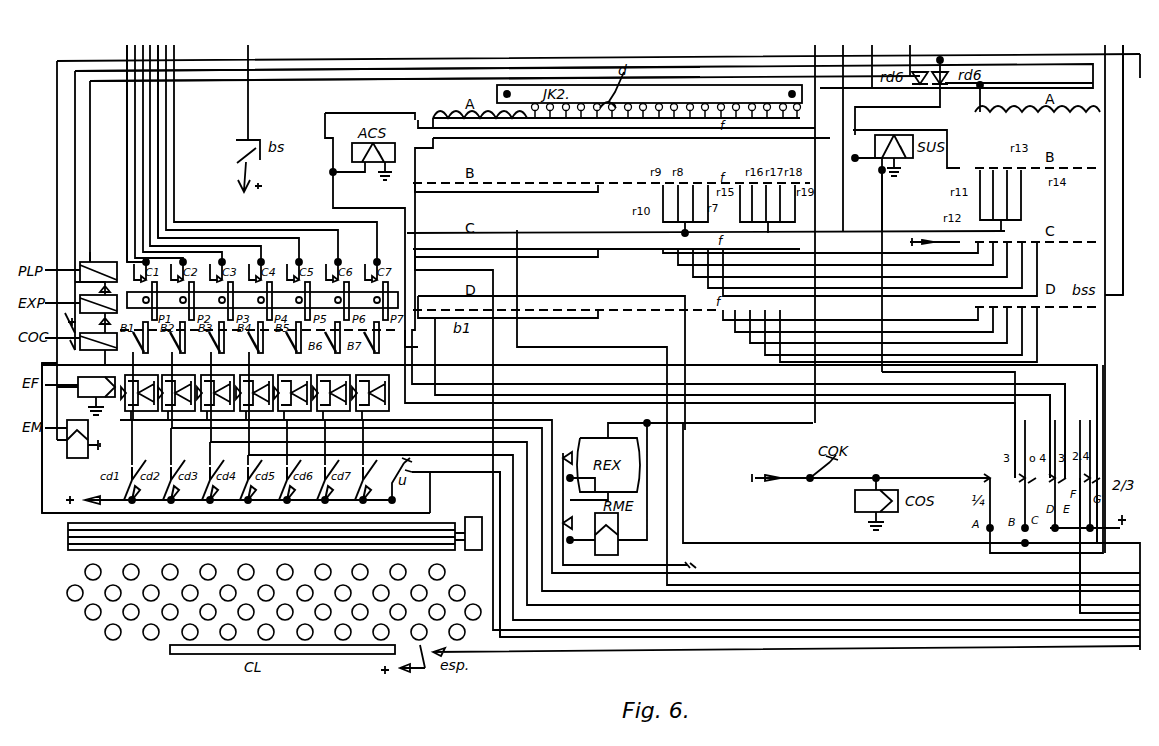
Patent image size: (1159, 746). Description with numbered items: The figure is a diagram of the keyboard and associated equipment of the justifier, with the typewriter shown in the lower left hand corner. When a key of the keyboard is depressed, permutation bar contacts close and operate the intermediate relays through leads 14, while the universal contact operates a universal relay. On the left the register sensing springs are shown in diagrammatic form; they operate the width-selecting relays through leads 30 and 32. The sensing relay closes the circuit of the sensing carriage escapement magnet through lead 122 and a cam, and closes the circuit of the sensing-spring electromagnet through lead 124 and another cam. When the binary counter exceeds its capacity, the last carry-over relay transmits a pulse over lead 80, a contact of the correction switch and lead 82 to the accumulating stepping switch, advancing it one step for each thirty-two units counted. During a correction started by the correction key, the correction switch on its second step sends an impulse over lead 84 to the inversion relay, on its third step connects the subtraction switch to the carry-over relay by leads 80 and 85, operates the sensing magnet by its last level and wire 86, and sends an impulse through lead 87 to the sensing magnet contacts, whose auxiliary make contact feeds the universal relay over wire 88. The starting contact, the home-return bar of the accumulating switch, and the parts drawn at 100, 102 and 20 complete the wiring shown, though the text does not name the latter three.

The lead 122 is at (275, 70).
The lead 124 is at (340, 80).
The lead 32 is at (162, 129).
The lead 30 is at (140, 158).
The lead 85 is at (882, 205).
The lead 80 is at (602, 347).
The lead 82 is at (462, 365).
The wire 86 is at (1073, 384).
The lead 87 is at (1065, 430).
The wire 88 is at (42, 488).
The leads 14 is at (450, 460).
The conductor 100 is at (838, 543).
The conductor 102 is at (1123, 300).
The lead 84 is at (1082, 575).
The conductor 20 is at (588, 638).